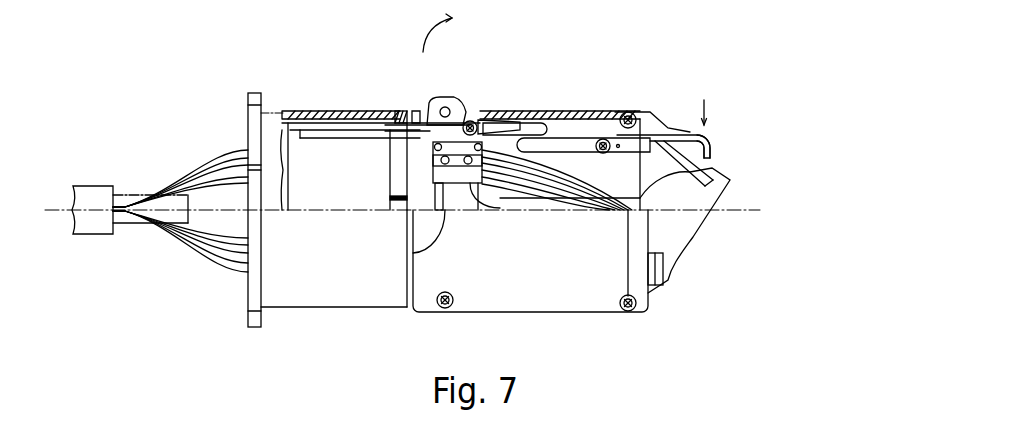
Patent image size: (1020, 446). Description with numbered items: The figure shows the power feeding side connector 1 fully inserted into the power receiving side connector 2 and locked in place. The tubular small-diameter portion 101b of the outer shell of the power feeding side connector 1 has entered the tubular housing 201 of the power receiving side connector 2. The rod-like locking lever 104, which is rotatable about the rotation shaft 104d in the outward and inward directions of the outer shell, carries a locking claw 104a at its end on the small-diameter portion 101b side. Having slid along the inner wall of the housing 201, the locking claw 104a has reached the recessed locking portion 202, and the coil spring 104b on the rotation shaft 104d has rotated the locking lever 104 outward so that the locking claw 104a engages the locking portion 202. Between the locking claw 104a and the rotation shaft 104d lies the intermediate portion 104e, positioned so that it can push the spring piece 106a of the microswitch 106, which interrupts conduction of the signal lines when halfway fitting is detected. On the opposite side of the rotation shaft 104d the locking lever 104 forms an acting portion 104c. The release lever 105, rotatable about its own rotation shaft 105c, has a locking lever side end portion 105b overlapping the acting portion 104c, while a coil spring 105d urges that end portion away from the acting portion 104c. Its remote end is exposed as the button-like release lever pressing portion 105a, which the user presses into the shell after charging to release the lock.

The power feeding side connector 1 is at (421, 181).
The power receiving side connector 2 is at (185, 126).
The small-diameter portion 101b is at (572, 313).
The locking lever 104 is at (497, 74).
The locking claw 104a is at (368, 110).
The coil spring 104b is at (473, 118).
The acting portion 104c is at (548, 118).
The rotation shaft 104d is at (478, 128).
The intermediate portion 104e is at (427, 122).
The release lever 105 is at (656, 184).
The release lever pressing portion 105a is at (718, 153).
The locking lever side end portion 105b is at (533, 158).
The rotation shaft 105c is at (641, 129).
The coil spring 105d is at (610, 160).
The microswitch 106 is at (457, 190).
The spring piece 106a is at (432, 142).
The housing 201 is at (313, 308).
The locking portion 202 is at (395, 118).